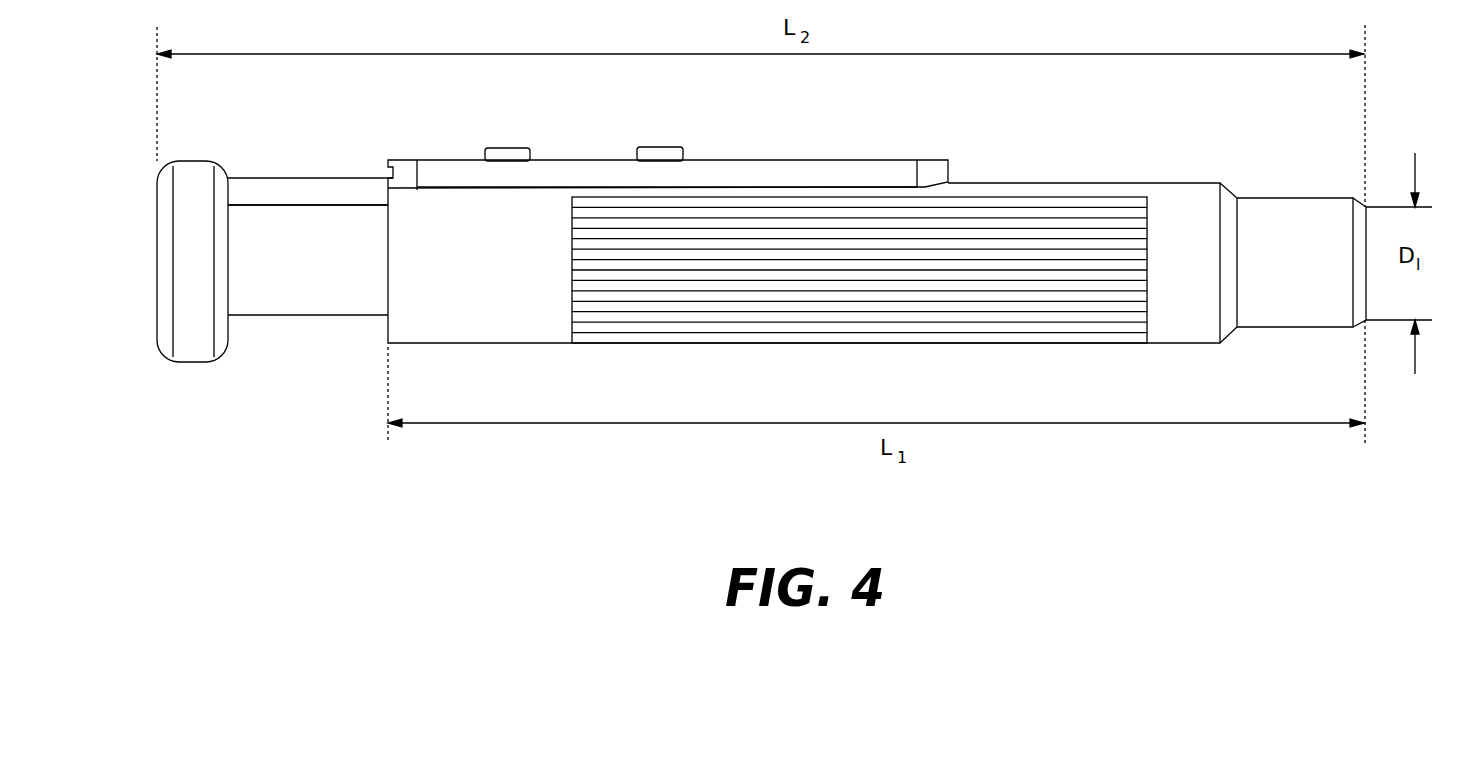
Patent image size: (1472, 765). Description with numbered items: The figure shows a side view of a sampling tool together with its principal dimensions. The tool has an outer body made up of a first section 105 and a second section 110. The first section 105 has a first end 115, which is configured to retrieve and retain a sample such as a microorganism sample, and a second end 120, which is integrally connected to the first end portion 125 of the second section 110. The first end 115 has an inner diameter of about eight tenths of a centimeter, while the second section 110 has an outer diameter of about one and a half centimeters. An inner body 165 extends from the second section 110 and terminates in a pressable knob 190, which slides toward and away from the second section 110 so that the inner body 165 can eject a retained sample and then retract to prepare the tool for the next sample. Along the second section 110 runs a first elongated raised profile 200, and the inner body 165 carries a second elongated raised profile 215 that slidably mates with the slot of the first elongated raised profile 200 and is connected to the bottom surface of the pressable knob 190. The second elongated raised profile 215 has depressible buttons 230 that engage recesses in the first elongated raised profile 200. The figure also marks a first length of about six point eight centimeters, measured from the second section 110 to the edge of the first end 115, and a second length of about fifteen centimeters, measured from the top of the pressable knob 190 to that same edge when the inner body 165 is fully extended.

The first section 105 is at (921, 275).
The second section 110 is at (662, 368).
The first end 115 is at (1372, 184).
The second end 120 is at (1249, 341).
The first end portion 125 is at (1238, 179).
The inner body 165 is at (276, 341).
The pressable knob 190 is at (143, 343).
The first elongated raised profile 200 is at (668, 131).
The second elongated raised profile 215 is at (290, 162).
The depressible button 230 is at (513, 134).